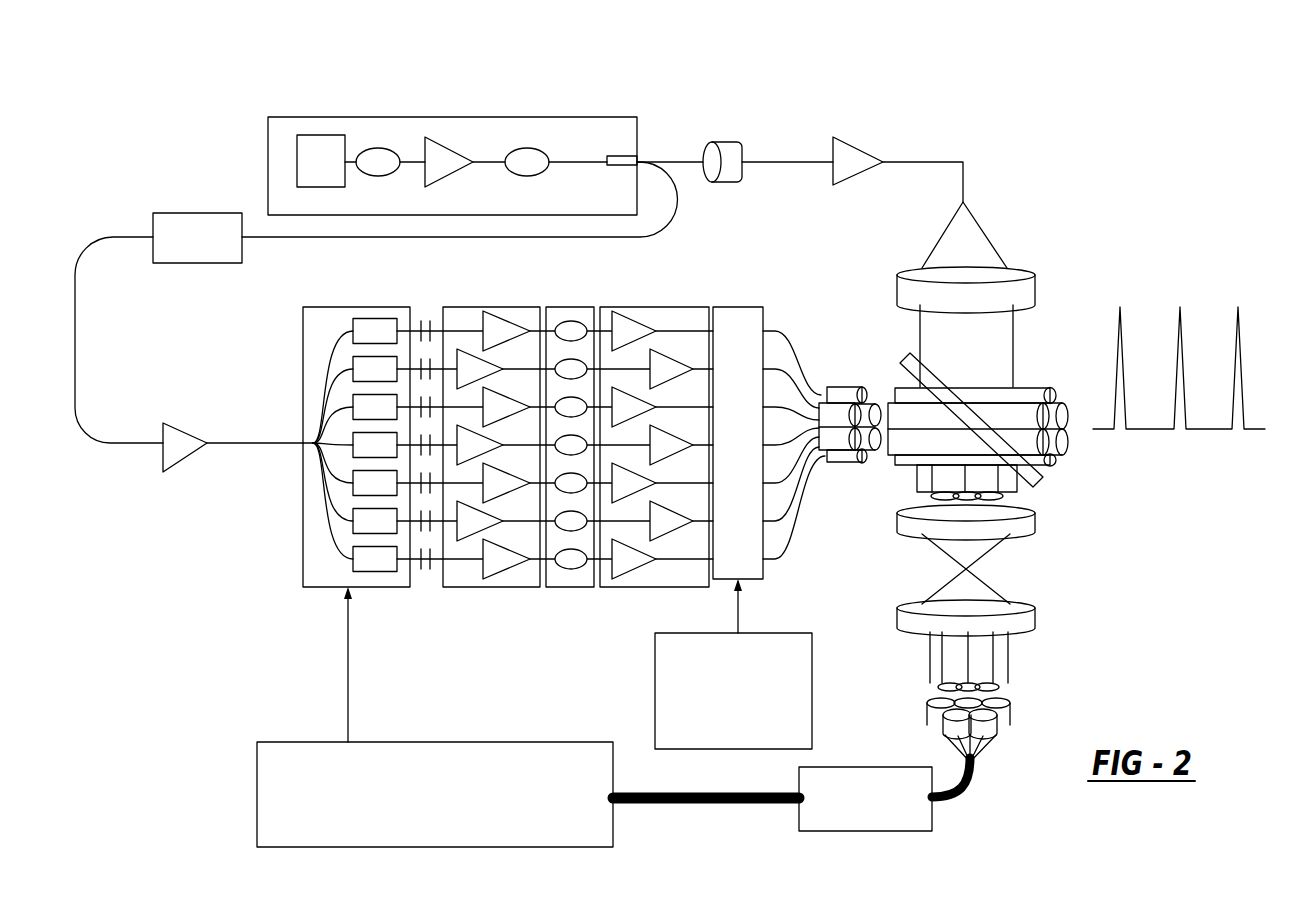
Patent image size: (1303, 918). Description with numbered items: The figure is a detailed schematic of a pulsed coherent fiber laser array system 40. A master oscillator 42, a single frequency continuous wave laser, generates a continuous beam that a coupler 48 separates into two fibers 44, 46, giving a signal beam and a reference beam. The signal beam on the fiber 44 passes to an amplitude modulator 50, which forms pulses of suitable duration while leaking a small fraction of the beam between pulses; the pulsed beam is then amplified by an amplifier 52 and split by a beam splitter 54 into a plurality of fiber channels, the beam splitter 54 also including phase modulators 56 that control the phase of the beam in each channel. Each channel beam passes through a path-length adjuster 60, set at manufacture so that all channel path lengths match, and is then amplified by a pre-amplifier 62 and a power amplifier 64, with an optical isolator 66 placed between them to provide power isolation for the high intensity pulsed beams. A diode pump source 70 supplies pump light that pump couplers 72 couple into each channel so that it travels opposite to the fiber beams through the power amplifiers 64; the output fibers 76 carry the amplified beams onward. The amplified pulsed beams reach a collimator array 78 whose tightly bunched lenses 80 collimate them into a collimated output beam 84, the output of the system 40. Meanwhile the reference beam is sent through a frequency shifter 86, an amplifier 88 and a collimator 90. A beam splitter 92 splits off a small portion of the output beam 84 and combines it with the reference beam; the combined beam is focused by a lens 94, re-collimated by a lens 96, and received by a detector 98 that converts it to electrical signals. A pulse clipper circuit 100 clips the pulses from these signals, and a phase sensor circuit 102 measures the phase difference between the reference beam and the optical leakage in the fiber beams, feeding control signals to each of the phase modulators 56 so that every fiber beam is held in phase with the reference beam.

The pulsed coherent fiber laser array system 40 is at (991, 110).
The master oscillator 42 is at (508, 117).
The fiber 44 is at (683, 160).
The fiber 46 is at (397, 238).
The coupler 48 is at (620, 157).
The amplitude modulator 50 is at (153, 232).
The amplifier 52 is at (193, 453).
The beam splitter 54 is at (304, 522).
The phase modulators 56 is at (352, 315).
The path-length adjuster 60 is at (432, 582).
The pre-amplifier 62 is at (503, 580).
The power amplifier 64 is at (642, 582).
The optical isolator 66 is at (579, 320).
The diode pump source 70 is at (812, 712).
The pump couplers 72 is at (743, 548).
The output fibers 76 is at (797, 528).
The collimator array 78 is at (848, 382).
The lenses 80 is at (843, 437).
The collimated output beam 84 is at (1062, 440).
The frequency shifter 86 is at (743, 152).
The amplifier 88 is at (872, 128).
The collimator 90 is at (1037, 288).
The beam splitter 92 is at (1038, 483).
The lens 94 is at (1030, 535).
The lens 96 is at (1037, 620).
The detector 98 is at (1004, 722).
The pulse clipper circuit 100 is at (878, 831).
The phase sensor circuit 102 is at (280, 742).